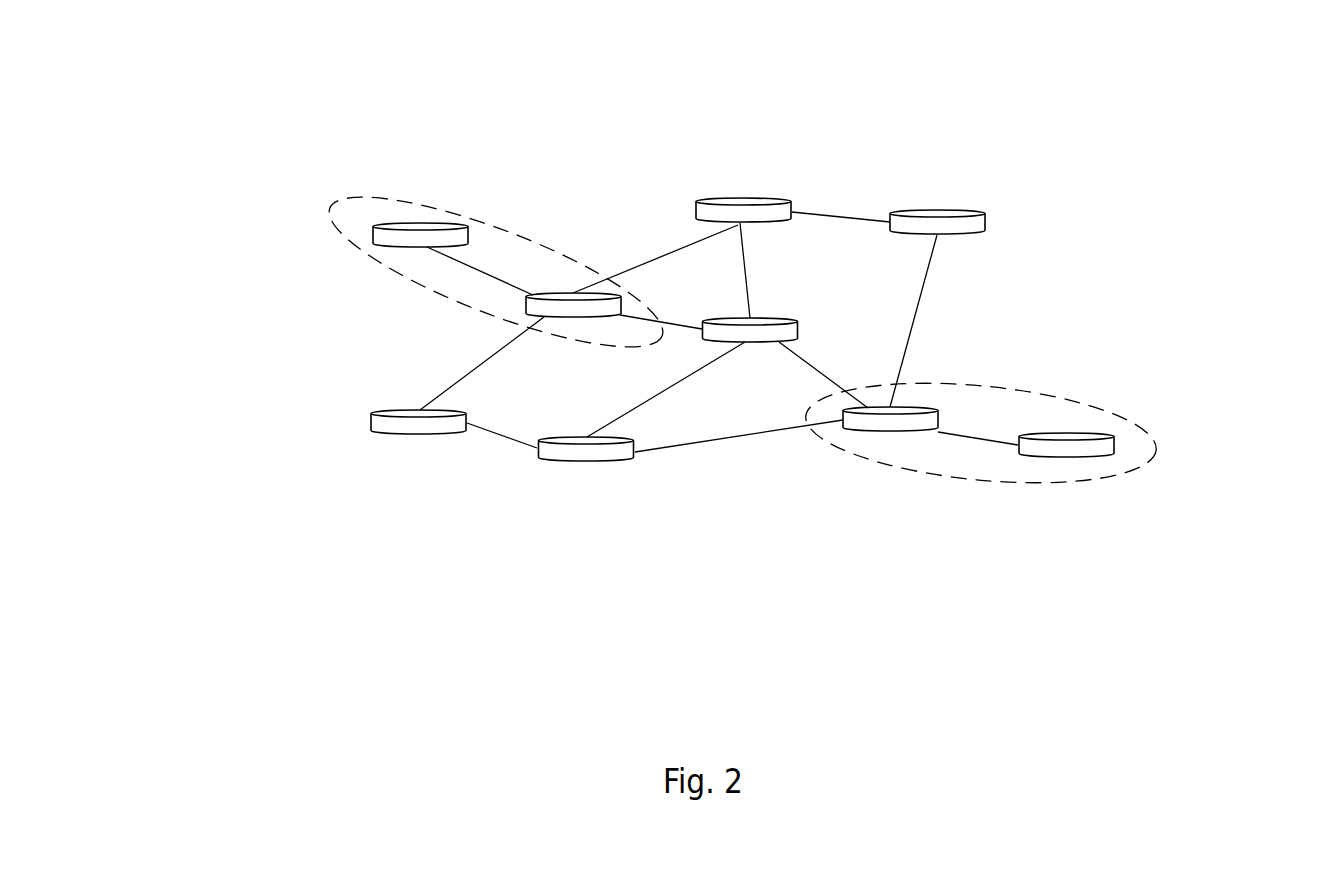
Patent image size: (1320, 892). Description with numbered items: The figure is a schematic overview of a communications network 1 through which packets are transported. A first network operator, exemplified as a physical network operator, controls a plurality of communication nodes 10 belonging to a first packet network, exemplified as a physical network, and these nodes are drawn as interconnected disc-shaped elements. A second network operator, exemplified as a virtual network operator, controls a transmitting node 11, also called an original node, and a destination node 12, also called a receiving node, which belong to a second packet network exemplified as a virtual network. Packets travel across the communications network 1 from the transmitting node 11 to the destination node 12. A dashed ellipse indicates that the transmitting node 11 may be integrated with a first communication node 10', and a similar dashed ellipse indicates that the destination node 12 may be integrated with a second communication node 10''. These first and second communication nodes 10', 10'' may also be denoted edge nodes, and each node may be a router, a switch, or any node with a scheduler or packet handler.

The communications network 1 is at (608, 82).
The communication node 10 is at (666, 331).
The first communication node 10' is at (395, 332).
The second communication node 10'' is at (875, 484).
The transmitting node 11 is at (447, 223).
The destination node 12 is at (1090, 435).